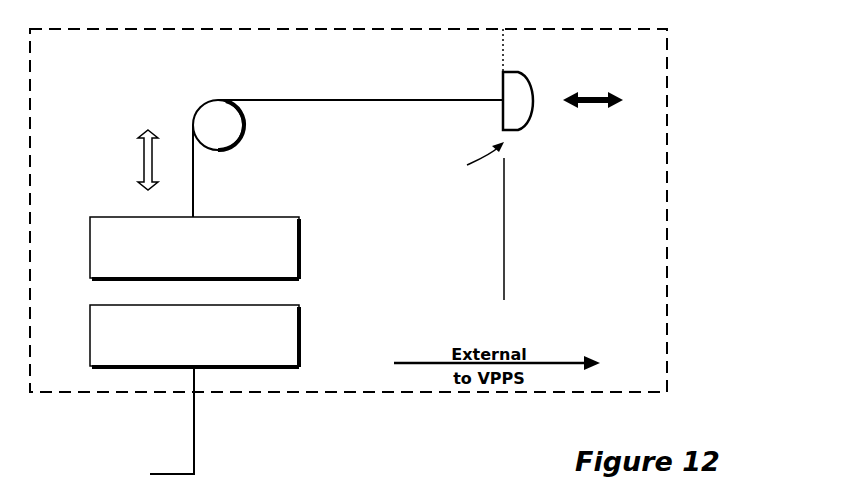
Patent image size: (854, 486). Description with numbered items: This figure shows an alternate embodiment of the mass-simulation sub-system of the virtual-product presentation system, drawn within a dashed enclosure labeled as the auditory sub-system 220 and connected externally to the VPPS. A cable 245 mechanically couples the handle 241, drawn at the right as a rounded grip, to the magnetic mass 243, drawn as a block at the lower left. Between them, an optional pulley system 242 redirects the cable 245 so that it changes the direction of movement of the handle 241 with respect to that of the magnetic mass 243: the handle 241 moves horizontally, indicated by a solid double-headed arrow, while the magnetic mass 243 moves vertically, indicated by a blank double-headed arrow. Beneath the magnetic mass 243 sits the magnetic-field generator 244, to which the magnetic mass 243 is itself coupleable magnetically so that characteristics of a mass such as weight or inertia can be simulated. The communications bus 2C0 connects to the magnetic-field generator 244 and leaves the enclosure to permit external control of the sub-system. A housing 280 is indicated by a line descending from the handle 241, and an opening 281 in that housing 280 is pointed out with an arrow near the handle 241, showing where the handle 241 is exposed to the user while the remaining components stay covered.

The auditory sub-system 220 is at (668, 229).
The handle 241 is at (503, 76).
The pulley system 242 is at (218, 125).
The magnetic mass 243 is at (194, 248).
The magnetic-field generator 244 is at (194, 336).
The cable 245 is at (298, 100).
The housing 280 is at (504, 300).
The opening 281 is at (462, 163).
The communications bus 2C0 is at (145, 425).